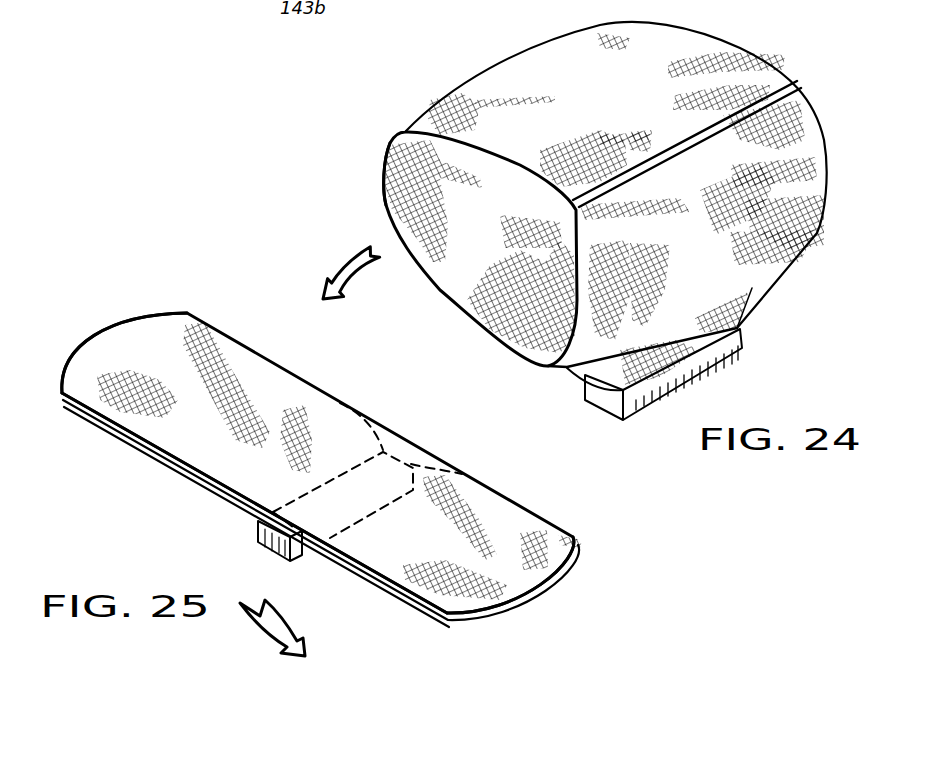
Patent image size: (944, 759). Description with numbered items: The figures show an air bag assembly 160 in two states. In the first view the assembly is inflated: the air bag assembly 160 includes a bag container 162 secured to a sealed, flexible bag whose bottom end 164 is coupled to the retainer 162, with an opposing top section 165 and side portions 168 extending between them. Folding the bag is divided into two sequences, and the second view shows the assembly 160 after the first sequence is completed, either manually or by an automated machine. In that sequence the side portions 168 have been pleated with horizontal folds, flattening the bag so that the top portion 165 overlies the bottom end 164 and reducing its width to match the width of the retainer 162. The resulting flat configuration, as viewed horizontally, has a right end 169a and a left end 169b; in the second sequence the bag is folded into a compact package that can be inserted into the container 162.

In FIG. 24, the air bag assembly 160 is at (452, 321).
In FIG. 25, the air bag assembly 160 is at (188, 480).
In FIG. 24, the bag container 162 is at (600, 405).
In FIG. 25, the bag container 162 is at (278, 558).
In FIG. 24, the bottom end 164 is at (744, 306).
In FIG. 25, the bottom end 164 is at (262, 514).
In FIG. 24, the top section 165 is at (757, 57).
In FIG. 25, the top section 165 is at (303, 393).
In FIG. 24, the side portions 168 is at (395, 186).
In FIG. 25, the side portions 168 is at (130, 437).
In FIG. 25, the right end 169a is at (577, 556).
In FIG. 25, the left end 169b is at (140, 303).